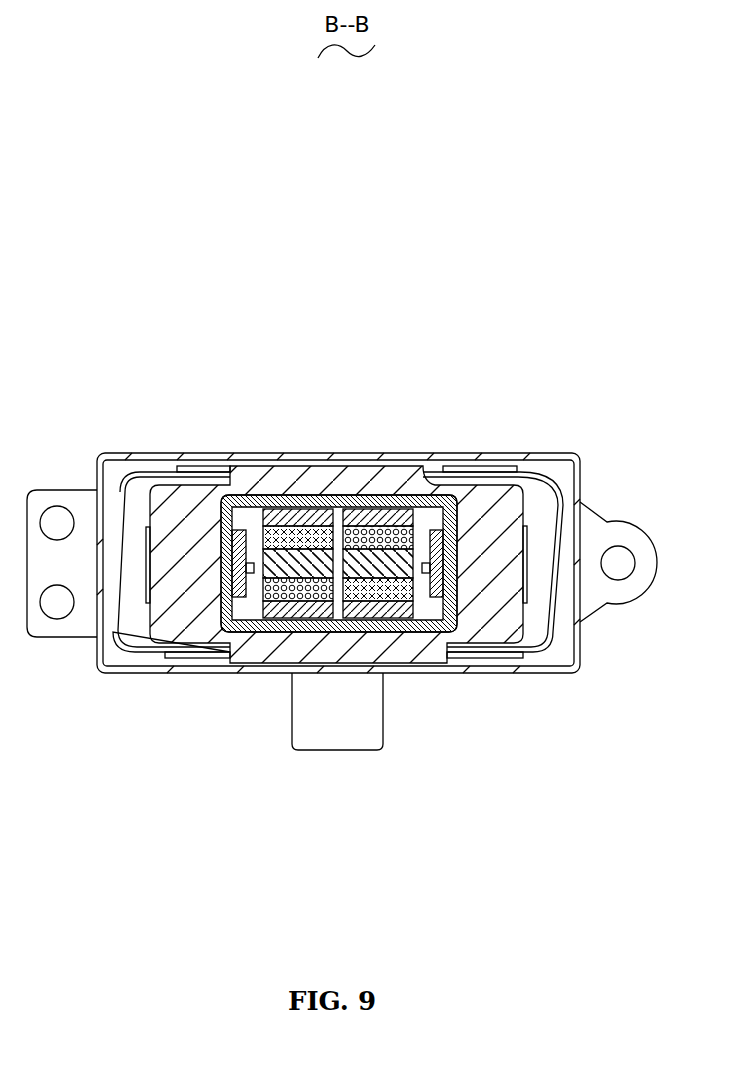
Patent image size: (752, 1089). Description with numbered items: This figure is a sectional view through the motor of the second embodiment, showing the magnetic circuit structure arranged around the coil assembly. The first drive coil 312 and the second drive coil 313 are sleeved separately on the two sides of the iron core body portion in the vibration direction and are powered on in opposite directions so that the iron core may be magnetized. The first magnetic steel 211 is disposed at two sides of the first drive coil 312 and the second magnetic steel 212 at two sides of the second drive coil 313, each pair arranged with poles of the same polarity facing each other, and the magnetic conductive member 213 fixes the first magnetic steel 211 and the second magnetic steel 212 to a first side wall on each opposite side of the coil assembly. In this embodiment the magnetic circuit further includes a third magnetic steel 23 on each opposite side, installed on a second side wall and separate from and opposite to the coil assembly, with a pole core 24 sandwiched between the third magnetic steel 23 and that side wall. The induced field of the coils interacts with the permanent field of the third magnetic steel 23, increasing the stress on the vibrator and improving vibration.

The third magnetic steel 23 is at (453, 540).
The pole core 24 is at (443, 568).
The first magnetic steel 211 is at (277, 630).
The second magnetic steel 212 is at (355, 630).
The magnetic conductive member 213 is at (407, 630).
The first drive coil 312 is at (299, 510).
The second drive coil 313 is at (372, 520).